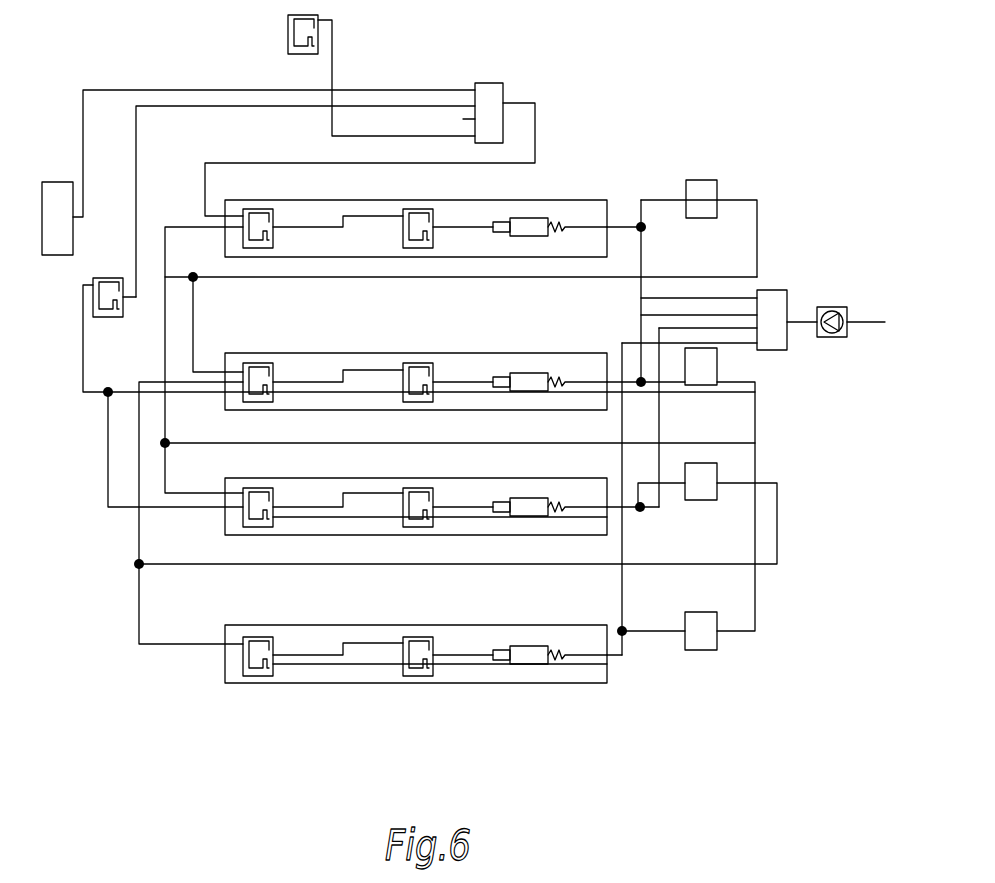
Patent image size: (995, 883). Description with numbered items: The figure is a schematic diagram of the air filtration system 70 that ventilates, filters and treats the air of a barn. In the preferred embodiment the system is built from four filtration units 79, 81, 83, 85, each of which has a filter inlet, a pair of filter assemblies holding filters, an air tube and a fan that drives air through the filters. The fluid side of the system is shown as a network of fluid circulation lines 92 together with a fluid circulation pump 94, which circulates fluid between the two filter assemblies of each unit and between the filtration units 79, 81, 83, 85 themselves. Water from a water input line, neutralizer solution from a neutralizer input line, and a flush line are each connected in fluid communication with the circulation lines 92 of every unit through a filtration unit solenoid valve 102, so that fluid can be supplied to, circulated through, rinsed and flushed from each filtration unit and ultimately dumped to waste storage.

The air filtration system 70 is at (775, 101).
The filtration unit 79 is at (210, 178).
The filtration unit 81 is at (268, 320).
The filtration unit 83 is at (242, 562).
The filtration unit 85 is at (250, 729).
The fluid circulation lines 92 is at (455, 227).
The fluid circulation pump 94 is at (837, 307).
The filtration unit solenoid valve 102 is at (545, 218).